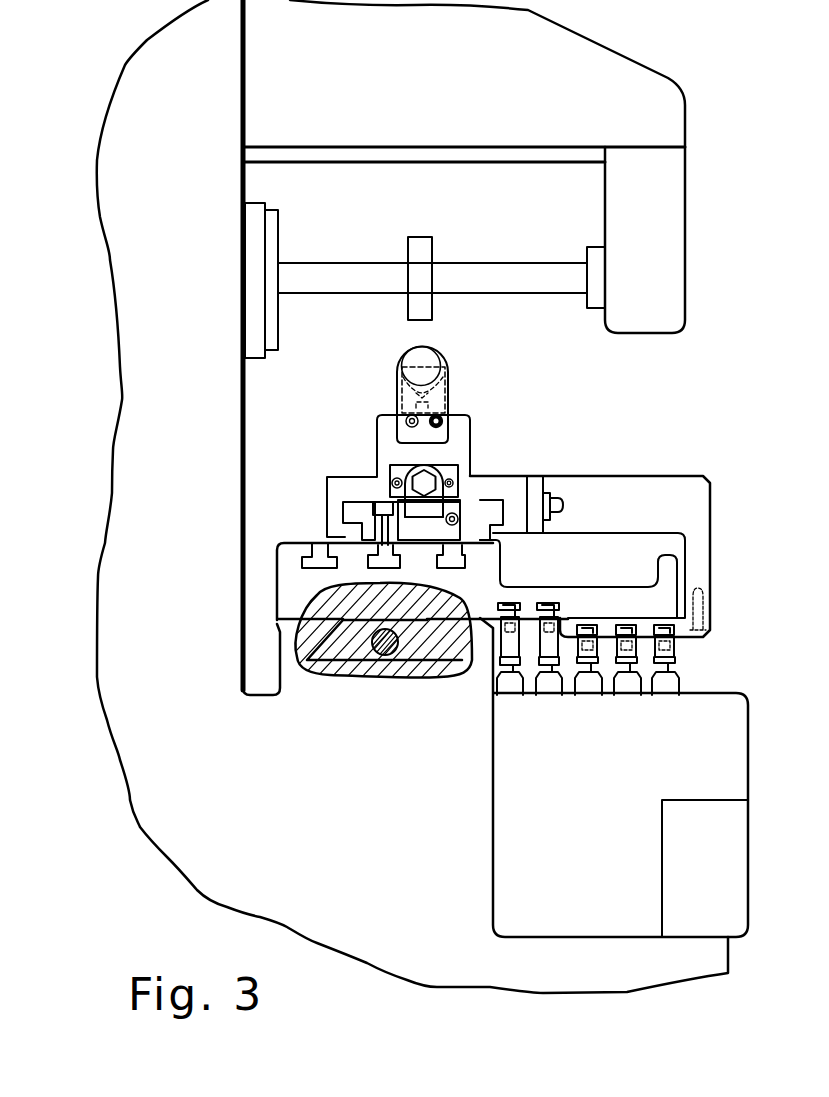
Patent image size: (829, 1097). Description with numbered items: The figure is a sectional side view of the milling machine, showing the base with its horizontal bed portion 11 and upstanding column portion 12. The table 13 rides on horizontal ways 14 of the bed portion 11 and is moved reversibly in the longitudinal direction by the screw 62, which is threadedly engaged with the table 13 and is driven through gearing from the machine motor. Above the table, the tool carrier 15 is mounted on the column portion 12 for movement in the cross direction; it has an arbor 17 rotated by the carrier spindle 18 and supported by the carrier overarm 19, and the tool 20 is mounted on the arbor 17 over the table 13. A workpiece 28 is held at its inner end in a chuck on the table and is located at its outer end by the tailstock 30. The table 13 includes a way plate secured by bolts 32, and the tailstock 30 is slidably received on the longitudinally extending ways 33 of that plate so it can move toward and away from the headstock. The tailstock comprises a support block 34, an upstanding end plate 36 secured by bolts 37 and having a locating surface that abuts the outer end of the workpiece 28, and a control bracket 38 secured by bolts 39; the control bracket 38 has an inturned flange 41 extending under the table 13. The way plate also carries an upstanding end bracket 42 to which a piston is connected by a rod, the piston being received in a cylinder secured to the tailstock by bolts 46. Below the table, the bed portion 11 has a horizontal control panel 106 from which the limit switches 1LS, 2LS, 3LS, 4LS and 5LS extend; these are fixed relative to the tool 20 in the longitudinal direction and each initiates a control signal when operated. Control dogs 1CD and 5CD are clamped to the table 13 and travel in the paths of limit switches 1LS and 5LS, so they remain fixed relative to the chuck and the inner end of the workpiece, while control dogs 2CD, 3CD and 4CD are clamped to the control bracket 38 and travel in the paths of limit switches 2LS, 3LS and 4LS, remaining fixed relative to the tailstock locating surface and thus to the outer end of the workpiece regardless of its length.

The horizontal bed portion 11 is at (362, 726).
The upstanding column portion 12 is at (171, 446).
The table 13 is at (290, 542).
The horizontal ways 14 is at (302, 618).
The tool carrier 15 is at (615, 47).
The arbor 17 is at (498, 295).
The carrier spindle 18 is at (278, 231).
The carrier overarm 19 is at (415, 94).
The tool 20 is at (432, 243).
The workpiece 28 is at (414, 347).
The tailstock 30 is at (470, 437).
The bolts 32 is at (383, 503).
The longitudinally extending ways 33 is at (350, 502).
The support block 34 is at (448, 385).
The upstanding end plate 36 is at (448, 365).
The bolts 37 is at (440, 424).
The control bracket 38 is at (618, 475).
The bolts 39 is at (563, 503).
The inturned flange 41 is at (698, 633).
The upstanding end bracket 42 is at (433, 516).
The bolts 46 is at (457, 473).
The screw 62 is at (420, 660).
The horizontal control panel 106 is at (723, 693).
The control dog 1CD is at (530, 603).
The control dog 2CD is at (602, 622).
The control dog 3CD is at (640, 622).
The control dog 4CD is at (681, 624).
The control dog 5CD is at (565, 606).
The limit switch 1LS is at (512, 688).
The limit switch 2LS is at (587, 688).
The limit switch 3LS is at (627, 688).
The limit switch 4LS is at (668, 688).
The limit switch 5LS is at (550, 688).